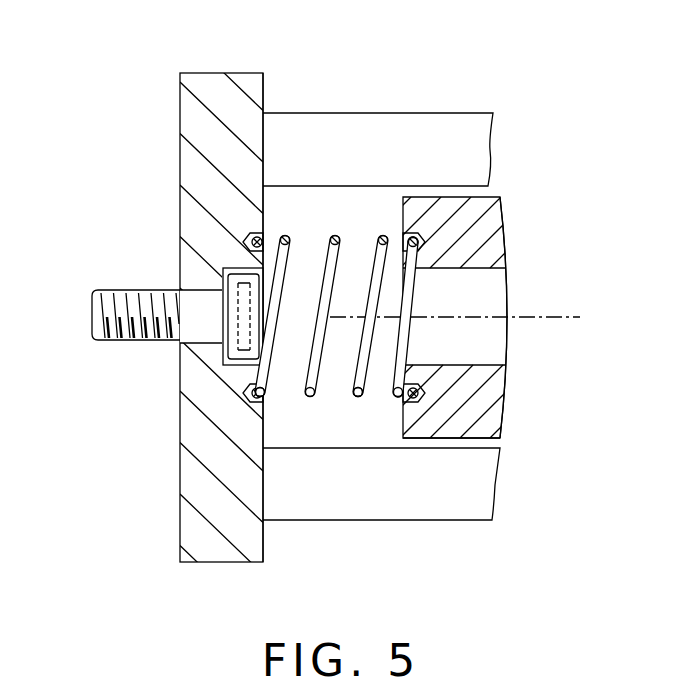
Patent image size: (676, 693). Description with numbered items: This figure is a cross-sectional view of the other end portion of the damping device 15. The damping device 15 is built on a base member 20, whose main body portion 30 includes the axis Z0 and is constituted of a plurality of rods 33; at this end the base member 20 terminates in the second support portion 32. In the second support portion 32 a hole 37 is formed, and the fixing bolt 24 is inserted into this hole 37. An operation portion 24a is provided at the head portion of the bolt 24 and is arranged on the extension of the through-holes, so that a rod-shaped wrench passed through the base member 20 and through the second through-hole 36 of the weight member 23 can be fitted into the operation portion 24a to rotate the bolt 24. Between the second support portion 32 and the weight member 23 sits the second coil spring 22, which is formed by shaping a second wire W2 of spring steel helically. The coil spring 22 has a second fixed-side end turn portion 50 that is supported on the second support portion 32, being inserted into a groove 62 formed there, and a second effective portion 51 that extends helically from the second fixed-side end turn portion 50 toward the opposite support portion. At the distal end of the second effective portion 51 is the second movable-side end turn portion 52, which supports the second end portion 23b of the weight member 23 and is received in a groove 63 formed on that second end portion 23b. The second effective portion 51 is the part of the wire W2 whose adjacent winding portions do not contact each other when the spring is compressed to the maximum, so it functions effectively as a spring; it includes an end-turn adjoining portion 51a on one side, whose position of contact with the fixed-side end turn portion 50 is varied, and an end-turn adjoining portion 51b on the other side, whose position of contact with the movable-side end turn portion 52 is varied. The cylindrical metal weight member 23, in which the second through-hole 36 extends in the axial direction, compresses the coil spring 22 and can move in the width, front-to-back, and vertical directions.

The damping device 15 is at (475, 80).
The base member 20 is at (452, 530).
The second coil spring 22 is at (340, 317).
The weight member 23 is at (451, 381).
The second end portion 23b is at (398, 440).
The fixing bolt 24 is at (90, 320).
The operation portion 24a is at (222, 272).
The main body portion 30 is at (397, 320).
The second support portion 32 is at (190, 530).
The rods 33 is at (480, 161).
The second through-hole 36 is at (493, 362).
The hole 37 is at (188, 341).
The second fixed-side end turn portion 50 is at (265, 238).
The second effective portion 51 is at (317, 378).
The end-turn adjoining portion 51a is at (270, 395).
The end-turn adjoining portion 51b is at (380, 400).
The second movable-side end turn portion 52 is at (410, 232).
The groove 62 is at (270, 244).
The groove 63 is at (399, 254).
The second wire W2 is at (372, 272).
The axis Z0 is at (560, 313).